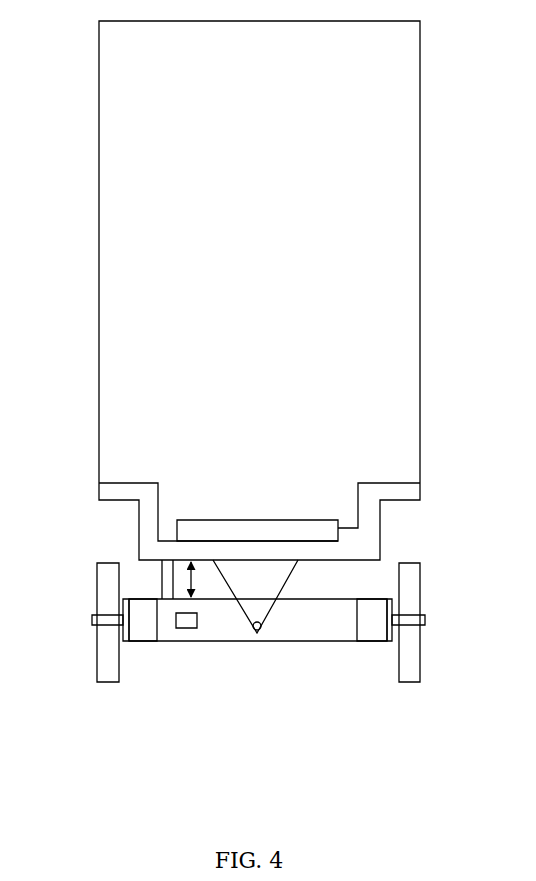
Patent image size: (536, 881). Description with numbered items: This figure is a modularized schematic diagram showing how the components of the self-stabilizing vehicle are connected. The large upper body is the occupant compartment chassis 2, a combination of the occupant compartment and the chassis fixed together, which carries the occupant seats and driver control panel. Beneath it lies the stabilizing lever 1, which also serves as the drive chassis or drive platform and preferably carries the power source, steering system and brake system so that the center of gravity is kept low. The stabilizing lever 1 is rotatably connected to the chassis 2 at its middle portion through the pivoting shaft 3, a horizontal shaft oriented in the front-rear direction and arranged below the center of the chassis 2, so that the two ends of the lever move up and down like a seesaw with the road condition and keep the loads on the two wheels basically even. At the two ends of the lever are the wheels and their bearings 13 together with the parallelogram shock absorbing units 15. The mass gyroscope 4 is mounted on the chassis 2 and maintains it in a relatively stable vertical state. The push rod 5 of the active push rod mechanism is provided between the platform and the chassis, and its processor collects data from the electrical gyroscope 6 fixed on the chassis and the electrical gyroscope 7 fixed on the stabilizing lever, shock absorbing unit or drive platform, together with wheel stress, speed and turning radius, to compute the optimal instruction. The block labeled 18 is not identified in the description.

The stabilizing lever 1 is at (307, 625).
The occupant compartment chassis 2 is at (259, 290).
The pivoting shaft 3 is at (255, 641).
The mass gyroscope 4 is at (238, 528).
The push rod 5 is at (164, 579).
The electrical gyroscope fixed on the chassis 6 is at (352, 535).
The electrical gyroscope fixed on the stabilizing lever 7 is at (190, 628).
The wheel and bearing 13 is at (95, 618).
The parallelogram shock absorbing unit 15 is at (145, 627).
The right block 18 is at (373, 627).